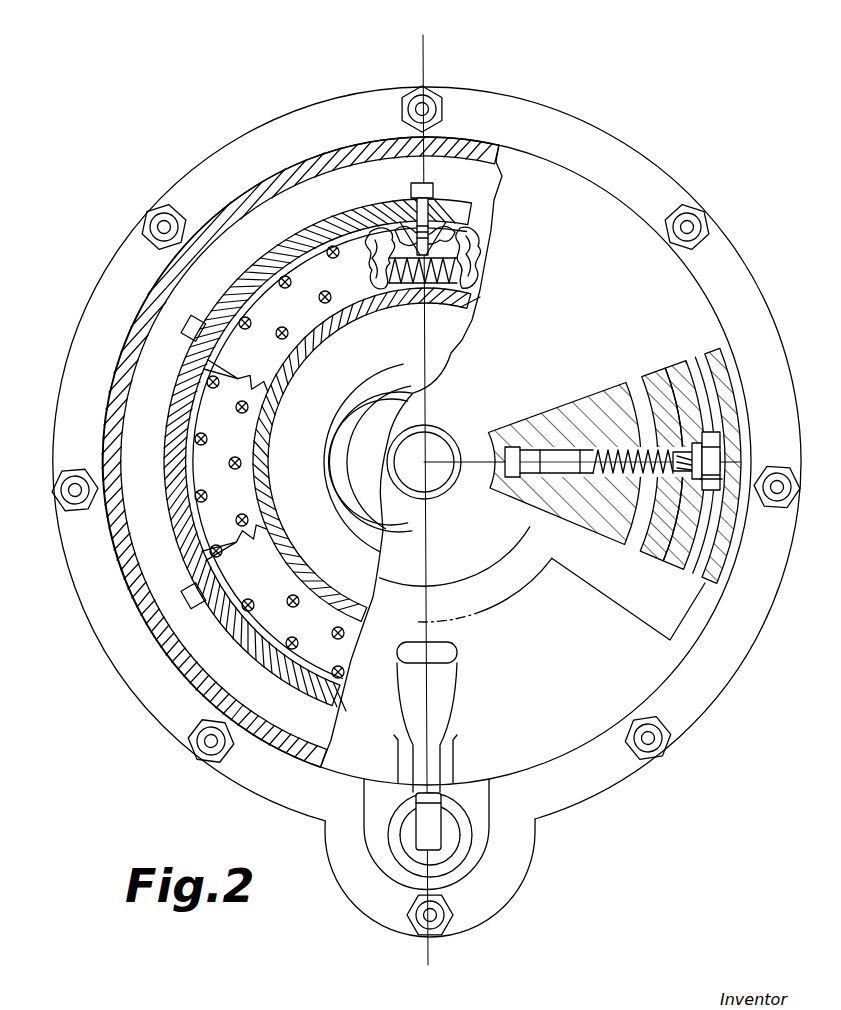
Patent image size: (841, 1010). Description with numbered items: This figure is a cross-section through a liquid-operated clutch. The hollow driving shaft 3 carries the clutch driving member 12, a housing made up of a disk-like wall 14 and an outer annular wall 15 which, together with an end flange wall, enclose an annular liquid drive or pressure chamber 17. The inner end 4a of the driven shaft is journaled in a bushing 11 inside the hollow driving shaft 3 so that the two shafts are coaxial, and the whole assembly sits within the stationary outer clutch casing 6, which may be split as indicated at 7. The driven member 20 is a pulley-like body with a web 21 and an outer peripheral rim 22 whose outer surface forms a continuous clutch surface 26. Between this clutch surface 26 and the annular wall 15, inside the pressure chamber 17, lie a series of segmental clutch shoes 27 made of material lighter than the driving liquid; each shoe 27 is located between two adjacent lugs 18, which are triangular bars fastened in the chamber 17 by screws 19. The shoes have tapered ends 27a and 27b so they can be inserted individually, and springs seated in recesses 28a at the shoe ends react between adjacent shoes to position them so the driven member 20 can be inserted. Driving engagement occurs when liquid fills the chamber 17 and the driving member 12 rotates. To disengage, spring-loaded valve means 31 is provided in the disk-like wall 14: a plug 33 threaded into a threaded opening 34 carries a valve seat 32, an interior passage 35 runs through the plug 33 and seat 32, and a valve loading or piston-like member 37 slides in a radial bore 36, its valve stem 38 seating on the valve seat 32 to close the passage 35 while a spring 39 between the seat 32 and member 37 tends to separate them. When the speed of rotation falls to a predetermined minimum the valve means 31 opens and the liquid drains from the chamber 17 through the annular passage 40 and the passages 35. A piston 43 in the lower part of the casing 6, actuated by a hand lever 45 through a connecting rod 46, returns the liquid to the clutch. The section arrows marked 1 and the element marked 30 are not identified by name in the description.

The section line 1 is at (456, 42).
The driving shaft 3 is at (458, 425).
The inner end of the driven shaft 4a is at (424, 462).
The outer clutch casing 6 is at (561, 478).
The split 7 is at (276, 785).
The bushing 11 is at (455, 500).
The clutch driving member 12 is at (135, 410).
The disk-like wall 14 is at (677, 551).
The outer annular wall 15 is at (350, 216).
The liquid drive or pressure chamber 17 is at (187, 458).
The lugs 18 is at (425, 252).
The screws 19 is at (428, 195).
The driven member 20 is at (355, 568).
The web 21 is at (294, 471).
The outer peripheral rim 22 is at (383, 300).
The clutch surface 26 is at (250, 497).
The segmental members or clutch shoes 27 is at (305, 262).
The tapered construction 27a is at (237, 345).
The tapered construction 27b is at (273, 355).
The recesses 28a is at (370, 278).
The hub flange 30 is at (343, 437).
The spring loaded valve means 31 is at (705, 422).
The valve seat 32 is at (693, 440).
The plug 33 is at (713, 446).
The threaded opening 34 is at (703, 480).
The interior passage 35 is at (712, 468).
The bore 36 is at (600, 470).
The valve loading or piston-like member 37 is at (532, 452).
The valve stem 38 is at (633, 410).
The spring 39 is at (600, 470).
The annular passage 40 is at (650, 545).
The piston 43 is at (446, 850).
The hand lever 45 is at (442, 688).
The connecting rod 46 is at (423, 827).